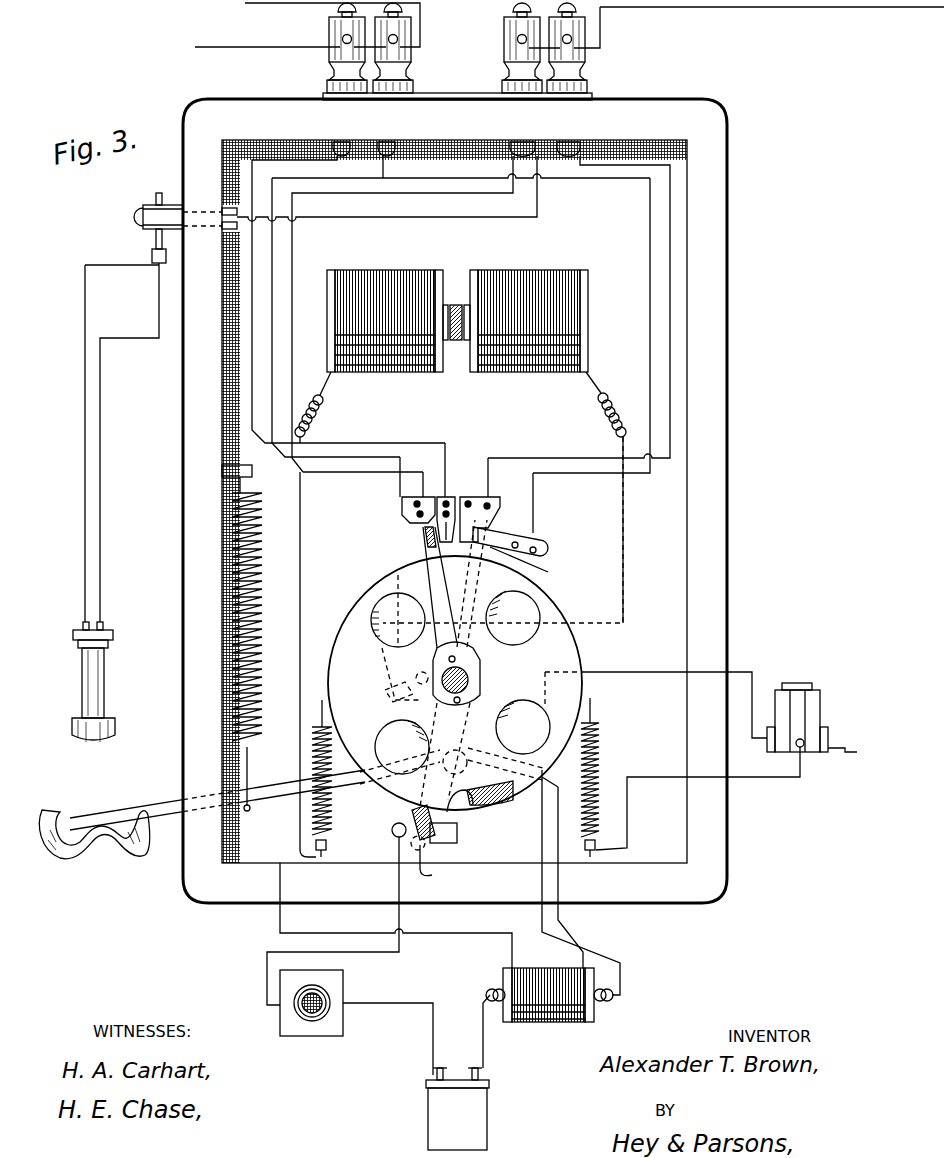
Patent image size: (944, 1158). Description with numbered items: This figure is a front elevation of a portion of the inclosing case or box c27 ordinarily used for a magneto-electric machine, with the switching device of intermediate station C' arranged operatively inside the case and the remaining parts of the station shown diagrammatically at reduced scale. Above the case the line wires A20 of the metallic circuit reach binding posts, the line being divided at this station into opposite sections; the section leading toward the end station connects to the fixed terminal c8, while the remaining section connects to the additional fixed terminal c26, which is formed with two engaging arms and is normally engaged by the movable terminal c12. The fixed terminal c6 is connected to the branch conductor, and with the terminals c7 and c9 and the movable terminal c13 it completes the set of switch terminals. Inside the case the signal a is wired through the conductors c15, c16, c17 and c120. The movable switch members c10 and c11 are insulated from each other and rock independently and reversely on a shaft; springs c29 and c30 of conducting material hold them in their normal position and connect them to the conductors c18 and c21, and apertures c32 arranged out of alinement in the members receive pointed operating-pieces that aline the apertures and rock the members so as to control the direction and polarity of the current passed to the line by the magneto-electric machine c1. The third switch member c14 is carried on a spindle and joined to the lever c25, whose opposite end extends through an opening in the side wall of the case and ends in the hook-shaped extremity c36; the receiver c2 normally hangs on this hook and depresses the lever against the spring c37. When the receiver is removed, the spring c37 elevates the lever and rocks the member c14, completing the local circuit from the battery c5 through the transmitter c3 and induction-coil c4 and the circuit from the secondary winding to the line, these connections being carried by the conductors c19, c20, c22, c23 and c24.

The responsive device or signal a is at (428, 300).
The line wire A20 is at (292, 38).
The magneto-electric machine c1 is at (812, 708).
The receiver c2 is at (85, 672).
The transmitter c3 is at (330, 1005).
The induction-coil c4 is at (544, 1022).
The battery c5 is at (457, 1090).
The terminal c6 is at (448, 497).
The terminal c7 is at (422, 499).
The terminal c8 is at (516, 536).
The terminal c9 is at (413, 826).
The movable switch member c10 is at (514, 605).
The movable switch member c11 is at (455, 683).
The movable terminal c12 is at (444, 176).
The movable terminal c13 is at (596, 178).
The movable switch member c14 is at (432, 867).
The conductor c15 is at (205, 48).
The conductor c16 is at (452, 218).
The conductor c17 is at (333, 178).
The conductor c18 is at (302, 650).
The conductor c19 is at (624, 535).
The conductor c20 is at (458, 840).
The conductor c21 is at (470, 810).
The conductor c22 is at (646, 673).
The conductor c23 is at (541, 856).
The conductor c24 is at (563, 890).
The conductor c25 is at (178, 797).
The additional fixed terminal c26 is at (490, 500).
The case wall wire c27 is at (183, 432).
The spring c29 is at (598, 775).
The spring c30 is at (336, 812).
The armature hub c32 is at (368, 685).
The receiver hook c36 is at (90, 820).
The spring c37 is at (235, 645).
The wire c120 is at (452, 193).